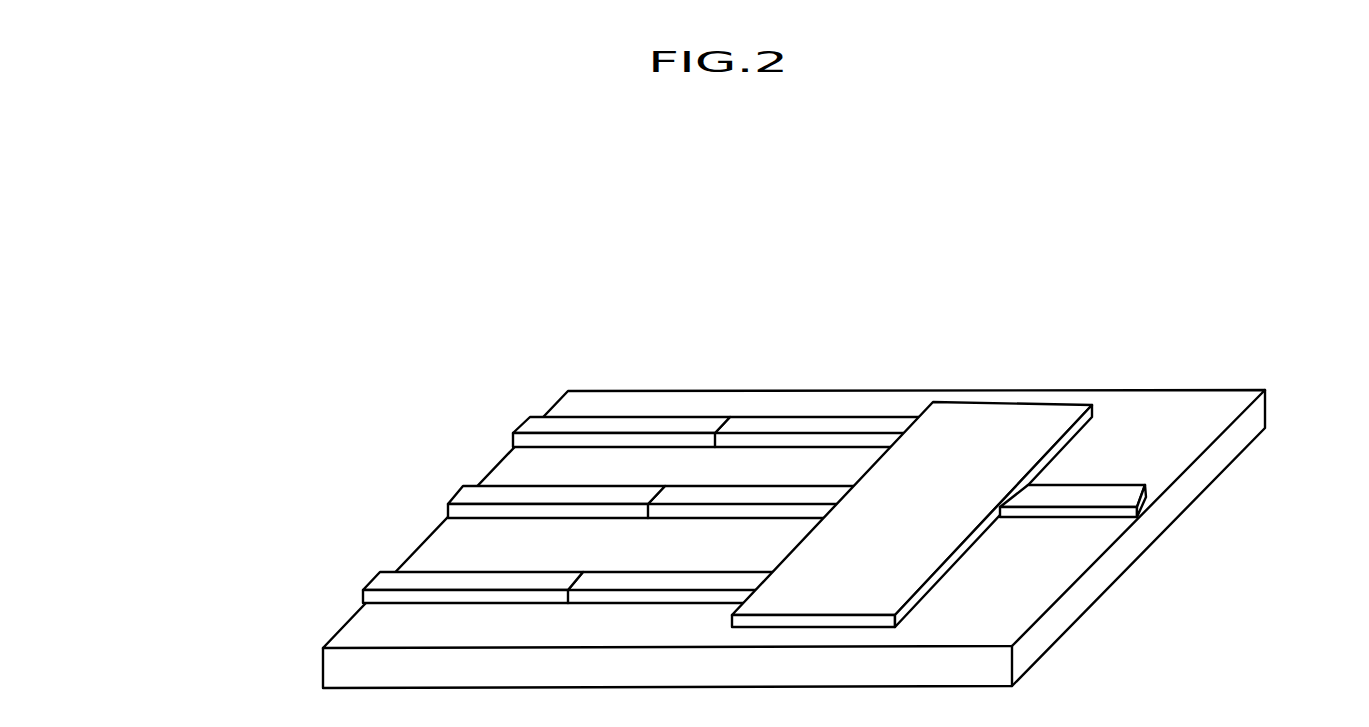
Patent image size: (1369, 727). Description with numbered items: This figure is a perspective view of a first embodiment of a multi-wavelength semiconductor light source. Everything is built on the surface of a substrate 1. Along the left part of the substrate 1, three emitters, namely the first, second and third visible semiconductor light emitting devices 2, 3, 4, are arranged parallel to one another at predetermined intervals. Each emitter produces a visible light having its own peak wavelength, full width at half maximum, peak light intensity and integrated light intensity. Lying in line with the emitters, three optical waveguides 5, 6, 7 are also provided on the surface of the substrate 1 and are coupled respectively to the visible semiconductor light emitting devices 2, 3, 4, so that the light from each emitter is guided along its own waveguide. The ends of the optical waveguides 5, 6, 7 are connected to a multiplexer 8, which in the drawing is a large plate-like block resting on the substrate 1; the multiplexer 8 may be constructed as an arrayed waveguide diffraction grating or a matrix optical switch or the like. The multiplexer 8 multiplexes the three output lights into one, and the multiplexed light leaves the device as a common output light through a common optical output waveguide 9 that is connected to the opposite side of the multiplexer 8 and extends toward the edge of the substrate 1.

The substrate 1 is at (1167, 398).
The first visible semiconductor light emitting device 2 is at (432, 580).
The second visible semiconductor light emitting device 3 is at (498, 492).
The third visible semiconductor light emitting device 4 is at (570, 418).
The optical waveguide 5 is at (682, 578).
The optical waveguide 6 is at (773, 493).
The optical waveguide 7 is at (847, 418).
The multiplexer 8 is at (1010, 412).
The common optical output waveguide 9 is at (1085, 512).